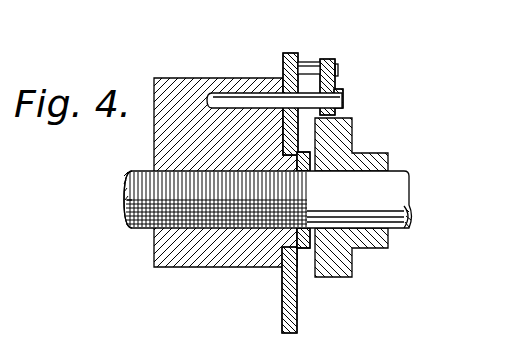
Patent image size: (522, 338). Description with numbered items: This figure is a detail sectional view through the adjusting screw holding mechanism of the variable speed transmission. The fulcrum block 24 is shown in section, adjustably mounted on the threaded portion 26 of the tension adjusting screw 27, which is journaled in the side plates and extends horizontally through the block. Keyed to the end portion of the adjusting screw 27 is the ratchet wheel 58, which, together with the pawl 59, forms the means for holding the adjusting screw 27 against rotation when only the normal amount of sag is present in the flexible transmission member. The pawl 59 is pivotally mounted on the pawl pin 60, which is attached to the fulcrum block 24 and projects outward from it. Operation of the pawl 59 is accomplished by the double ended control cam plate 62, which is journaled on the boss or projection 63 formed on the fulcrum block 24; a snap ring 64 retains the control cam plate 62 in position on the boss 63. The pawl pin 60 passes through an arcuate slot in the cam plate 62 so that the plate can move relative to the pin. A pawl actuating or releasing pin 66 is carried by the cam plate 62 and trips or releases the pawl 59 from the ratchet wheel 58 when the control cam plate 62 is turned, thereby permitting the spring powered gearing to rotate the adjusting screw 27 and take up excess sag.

The fulcrum block 24 is at (155, 141).
The threaded portion 26 is at (129, 229).
The adjusting screw 27 is at (404, 183).
The ratchet wheel 58 is at (353, 250).
The pawl 59 is at (342, 90).
The pawl pin 60 is at (234, 97).
The control cam plate 62 is at (293, 53).
The boss 63 is at (310, 174).
The snap ring 64 is at (298, 247).
The pawl releasing pin 66 is at (338, 63).